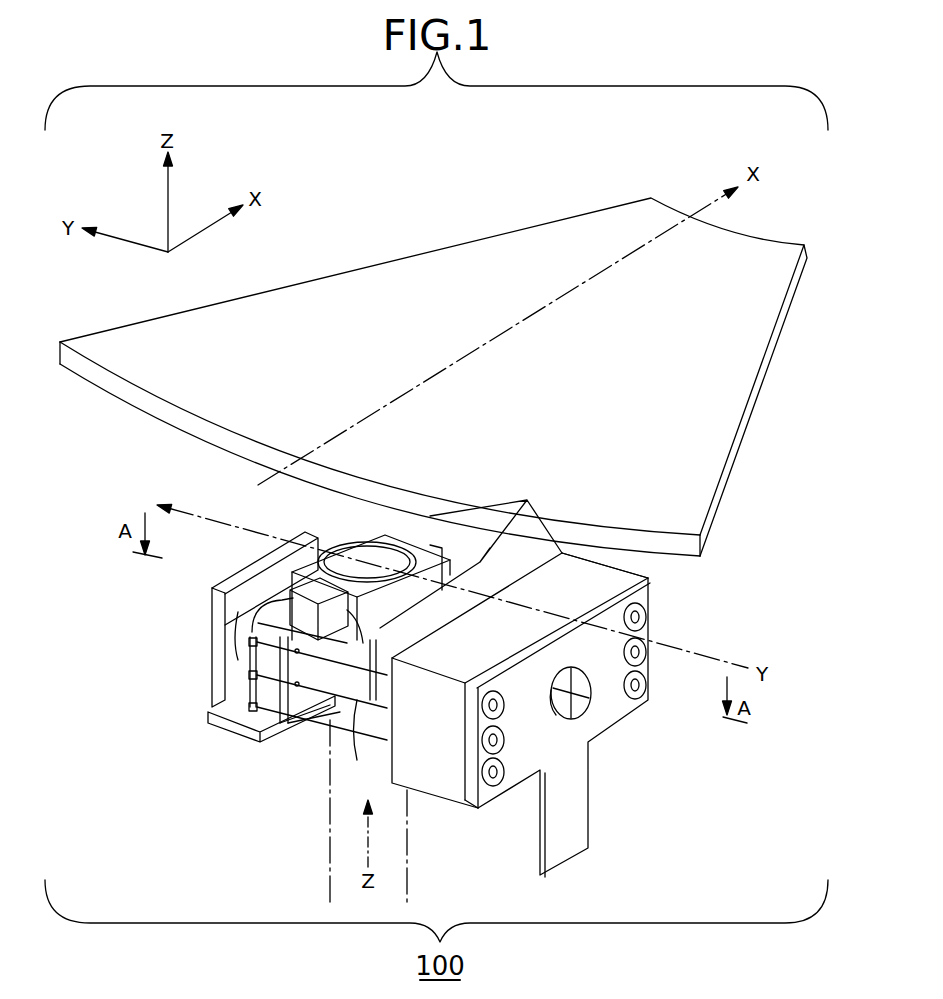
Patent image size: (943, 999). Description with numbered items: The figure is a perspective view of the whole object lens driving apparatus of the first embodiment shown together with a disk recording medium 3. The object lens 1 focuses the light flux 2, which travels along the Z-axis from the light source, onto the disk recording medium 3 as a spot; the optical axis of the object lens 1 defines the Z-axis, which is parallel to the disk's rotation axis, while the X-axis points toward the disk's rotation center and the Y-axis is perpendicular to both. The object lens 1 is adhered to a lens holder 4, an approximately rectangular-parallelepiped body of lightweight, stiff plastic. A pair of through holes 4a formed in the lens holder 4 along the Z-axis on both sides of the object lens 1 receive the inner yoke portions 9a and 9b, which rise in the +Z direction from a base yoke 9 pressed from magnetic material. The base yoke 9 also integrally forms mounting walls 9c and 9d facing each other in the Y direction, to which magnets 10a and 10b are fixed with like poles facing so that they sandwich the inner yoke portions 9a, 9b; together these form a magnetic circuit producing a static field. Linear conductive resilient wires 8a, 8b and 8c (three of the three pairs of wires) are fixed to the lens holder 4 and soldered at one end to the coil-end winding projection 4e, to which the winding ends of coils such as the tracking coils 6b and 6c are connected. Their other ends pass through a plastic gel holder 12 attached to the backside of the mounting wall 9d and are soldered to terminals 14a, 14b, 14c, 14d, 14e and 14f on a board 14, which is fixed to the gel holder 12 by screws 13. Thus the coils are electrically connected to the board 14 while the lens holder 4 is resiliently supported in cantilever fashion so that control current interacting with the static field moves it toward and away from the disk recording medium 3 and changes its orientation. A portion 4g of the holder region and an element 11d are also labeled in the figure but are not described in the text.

The object lens 1 is at (395, 555).
The light flux 2 is at (343, 857).
The disk recording medium 3 is at (703, 420).
The lens holder 4 is at (468, 573).
The through holes 4a is at (300, 617).
The coil-end winding projection 4e is at (272, 708).
The guide portion 4g is at (268, 722).
The tracking coil 6b is at (248, 618).
The tracking coil 6c is at (328, 740).
The wire 8a is at (300, 705).
The wire 8b is at (305, 725).
The wire 8c is at (310, 745).
The base yoke 9 is at (215, 722).
The inner yoke portion 9a is at (500, 505).
The inner yoke portion 9b is at (252, 590).
The mounting wall 9c is at (218, 643).
The mounting wall 9d is at (663, 592).
The magnet 10a is at (238, 612).
The magnet 10b is at (357, 760).
The mounting surface 11d is at (507, 577).
The gel holder 12 is at (443, 782).
The screws 13 is at (585, 700).
The board 14 is at (510, 780).
The terminal 14a is at (646, 617).
The terminal 14b is at (646, 652).
The terminal 14c is at (646, 690).
The terminal 14d is at (504, 705).
The terminal 14e is at (504, 740).
The terminal 14f is at (504, 772).